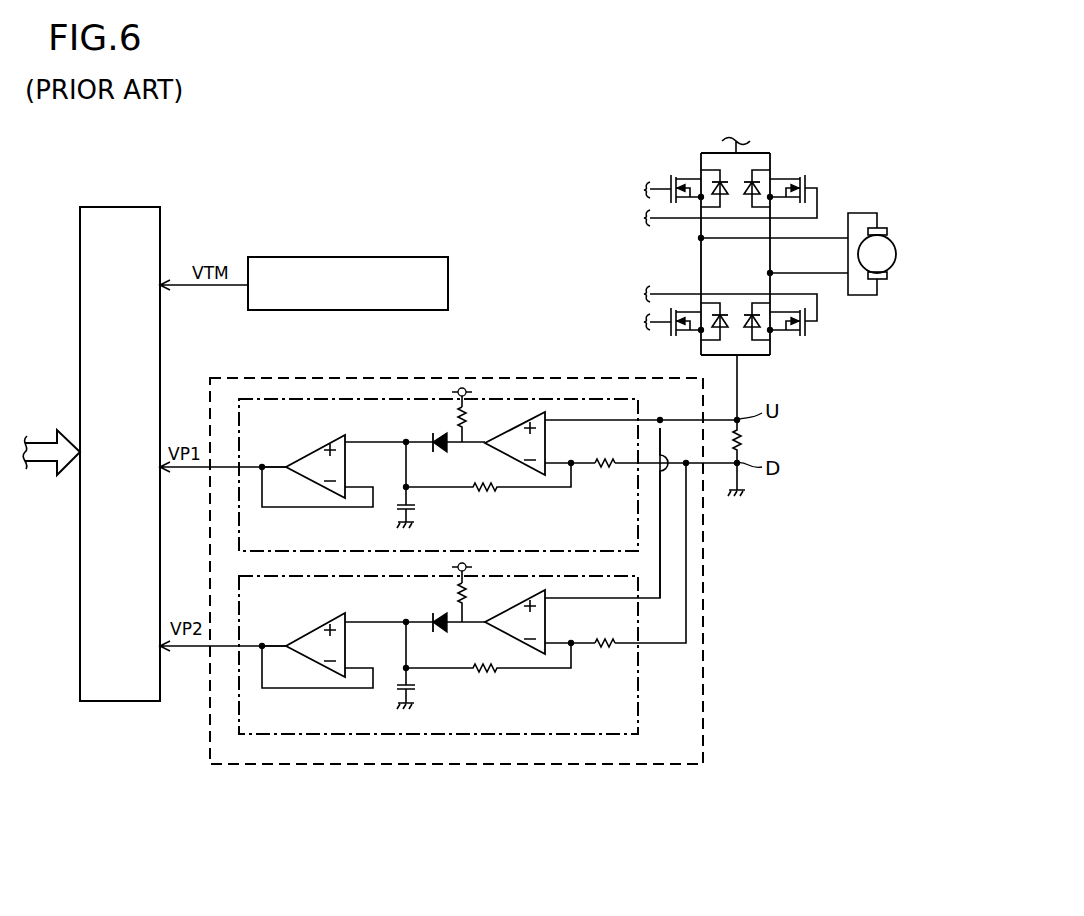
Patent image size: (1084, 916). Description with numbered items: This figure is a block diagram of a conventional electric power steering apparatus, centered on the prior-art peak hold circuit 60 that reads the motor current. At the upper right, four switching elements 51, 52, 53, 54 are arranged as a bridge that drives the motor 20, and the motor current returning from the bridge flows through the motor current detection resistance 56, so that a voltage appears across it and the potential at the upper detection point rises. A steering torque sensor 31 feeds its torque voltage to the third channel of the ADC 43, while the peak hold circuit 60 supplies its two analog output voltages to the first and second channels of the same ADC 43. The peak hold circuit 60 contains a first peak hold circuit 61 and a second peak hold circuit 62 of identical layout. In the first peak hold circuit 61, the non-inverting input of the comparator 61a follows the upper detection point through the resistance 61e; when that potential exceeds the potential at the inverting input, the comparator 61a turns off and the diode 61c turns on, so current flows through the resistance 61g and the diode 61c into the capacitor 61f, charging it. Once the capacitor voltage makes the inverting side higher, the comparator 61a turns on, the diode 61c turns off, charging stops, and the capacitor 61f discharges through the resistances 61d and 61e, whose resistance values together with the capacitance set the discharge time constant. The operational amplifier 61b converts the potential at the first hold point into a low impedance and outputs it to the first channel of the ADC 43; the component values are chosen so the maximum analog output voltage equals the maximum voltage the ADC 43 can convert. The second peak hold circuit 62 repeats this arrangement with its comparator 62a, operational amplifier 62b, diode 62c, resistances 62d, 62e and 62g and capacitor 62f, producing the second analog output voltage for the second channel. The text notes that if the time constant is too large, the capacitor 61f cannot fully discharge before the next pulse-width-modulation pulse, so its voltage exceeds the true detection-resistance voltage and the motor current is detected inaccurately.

The electric motor 20 is at (892, 242).
The steering torque sensor 31 is at (388, 257).
The ADC 43 is at (160, 233).
The switching element (upper-left FET) 51 is at (668, 187).
The switching element (upper-right FET) 52 is at (804, 186).
The switching element (lower-left FET) 53 is at (668, 330).
The switching element (lower-right FET) 54 is at (808, 328).
The motor current detection resistance 56 is at (750, 440).
The peak hold circuit 60 is at (527, 378).
The first peak hold circuit 61 is at (327, 399).
The comparator 61a is at (513, 427).
The operational amplifier 61b is at (312, 453).
The diode 61c is at (436, 432).
The resistance 61d is at (492, 483).
The resistance 61e is at (606, 460).
The capacitor 61f is at (400, 513).
The resistance 61g is at (456, 410).
The second peak hold circuit 62 is at (348, 576).
The differential amplifier 62a is at (513, 606).
The buffer amplifier 62b is at (312, 632).
The diode 62c is at (436, 613).
The feedback resistor R3 62d is at (492, 665).
The input resistor R4 62e is at (606, 640).
The capacitor 62f is at (400, 693).
The pull-up resistor 62g is at (456, 589).